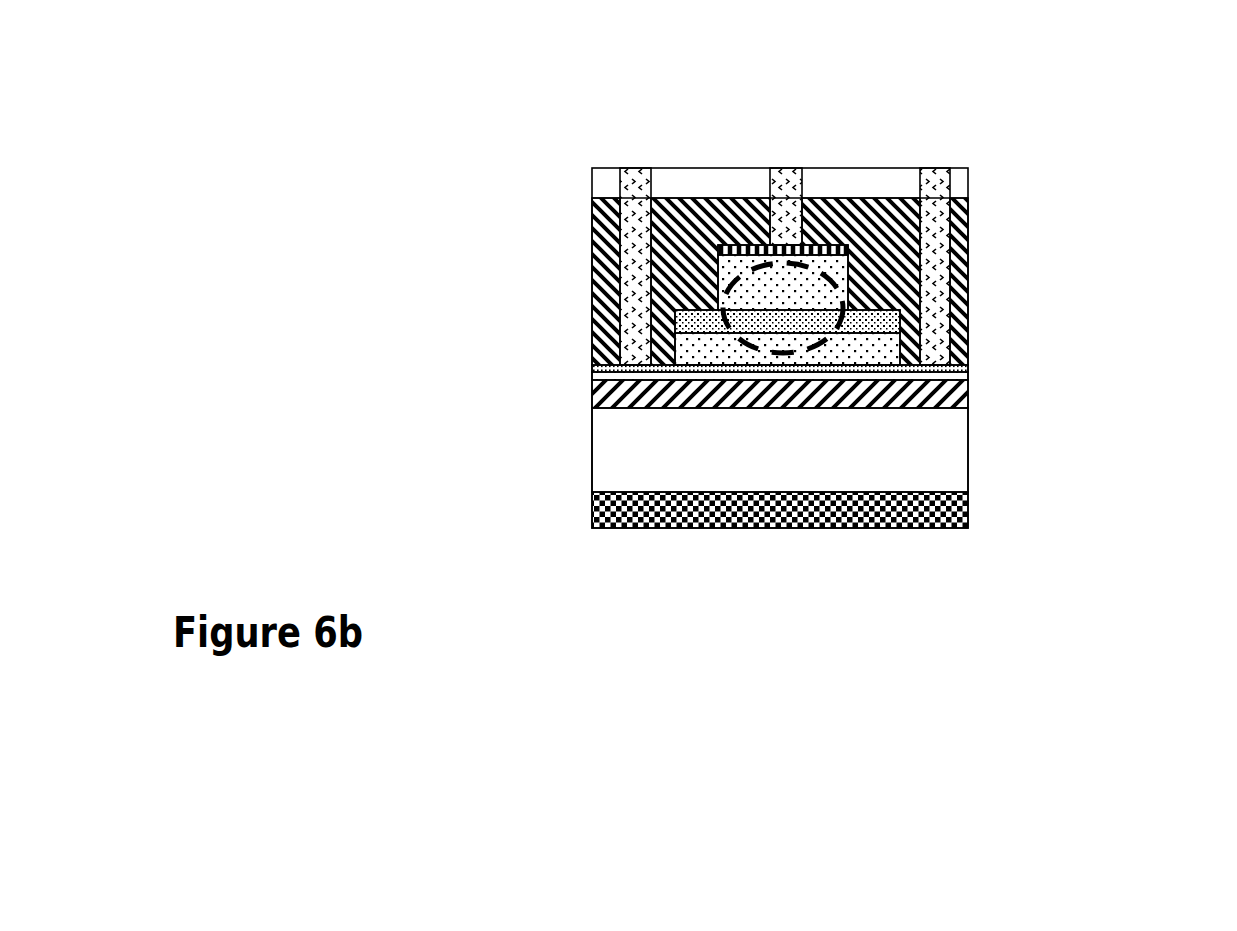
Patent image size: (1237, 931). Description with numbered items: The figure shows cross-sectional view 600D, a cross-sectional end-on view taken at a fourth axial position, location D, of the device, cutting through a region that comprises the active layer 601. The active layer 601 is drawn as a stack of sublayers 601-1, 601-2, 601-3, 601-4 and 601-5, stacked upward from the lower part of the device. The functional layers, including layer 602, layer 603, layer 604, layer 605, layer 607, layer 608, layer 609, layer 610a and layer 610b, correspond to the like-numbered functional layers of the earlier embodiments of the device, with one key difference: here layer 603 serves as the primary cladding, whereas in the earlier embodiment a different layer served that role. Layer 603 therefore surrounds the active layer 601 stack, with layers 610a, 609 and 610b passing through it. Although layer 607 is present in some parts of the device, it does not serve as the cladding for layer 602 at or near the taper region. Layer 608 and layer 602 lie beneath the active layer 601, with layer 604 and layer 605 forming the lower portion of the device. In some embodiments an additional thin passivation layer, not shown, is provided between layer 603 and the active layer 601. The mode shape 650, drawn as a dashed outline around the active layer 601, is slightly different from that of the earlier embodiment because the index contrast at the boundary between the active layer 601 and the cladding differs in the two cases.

The cross-sectional view 600D is at (422, 112).
The functional layer 607 is at (592, 188).
The primary cladding layer 603 is at (592, 266).
The functional layer 610a is at (636, 168).
The functional layer 609 is at (787, 168).
The functional layer 610b is at (935, 168).
The mode shape 650 is at (742, 277).
The active layer 601 is at (910, 253).
The active layer sublayer 601-5 is at (850, 247).
The active layer sublayer 601-4 is at (858, 279).
The active layer sublayer 601-3 is at (903, 320).
The active layer sublayer 601-2 is at (898, 352).
The active layer sublayer 601-1 is at (851, 383).
The functional layer 608 is at (592, 378).
The functional layer 602 is at (592, 396).
The functional layer 604 is at (592, 443).
The functional layer 605 is at (592, 513).